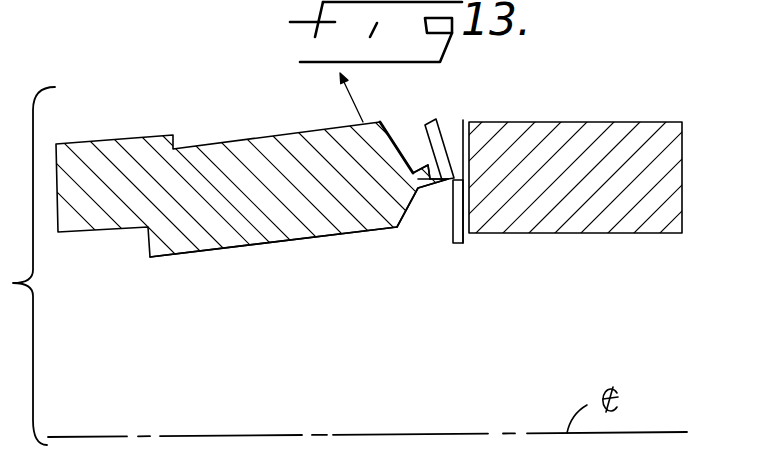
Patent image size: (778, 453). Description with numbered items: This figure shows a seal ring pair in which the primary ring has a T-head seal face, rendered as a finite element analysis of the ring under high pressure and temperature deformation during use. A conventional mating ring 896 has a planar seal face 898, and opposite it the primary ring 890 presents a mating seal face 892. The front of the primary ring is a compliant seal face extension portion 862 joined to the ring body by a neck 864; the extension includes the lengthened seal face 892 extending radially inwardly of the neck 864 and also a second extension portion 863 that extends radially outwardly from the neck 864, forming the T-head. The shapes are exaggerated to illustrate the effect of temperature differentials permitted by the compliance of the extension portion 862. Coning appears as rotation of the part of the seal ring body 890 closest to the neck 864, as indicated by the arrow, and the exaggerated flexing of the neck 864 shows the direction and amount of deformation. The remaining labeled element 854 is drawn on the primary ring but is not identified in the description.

The first body member 854 is at (282, 138).
The tab 863 is at (441, 121).
The tooth 864 is at (435, 180).
The notch 862 is at (450, 223).
The lower portion of body member 890 is at (302, 228).
The flange strip 892 is at (465, 241).
The interface line 898 is at (463, 121).
The second body member 896 is at (590, 133).